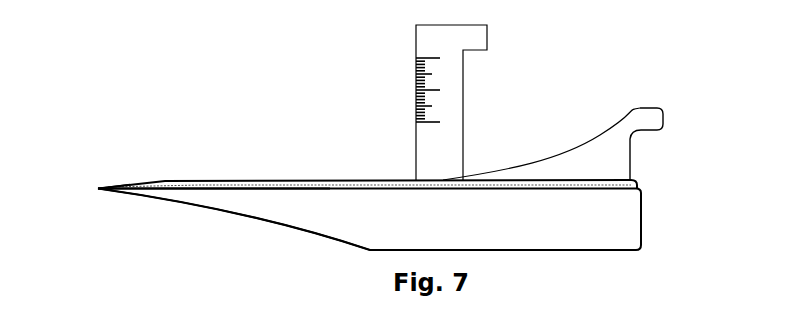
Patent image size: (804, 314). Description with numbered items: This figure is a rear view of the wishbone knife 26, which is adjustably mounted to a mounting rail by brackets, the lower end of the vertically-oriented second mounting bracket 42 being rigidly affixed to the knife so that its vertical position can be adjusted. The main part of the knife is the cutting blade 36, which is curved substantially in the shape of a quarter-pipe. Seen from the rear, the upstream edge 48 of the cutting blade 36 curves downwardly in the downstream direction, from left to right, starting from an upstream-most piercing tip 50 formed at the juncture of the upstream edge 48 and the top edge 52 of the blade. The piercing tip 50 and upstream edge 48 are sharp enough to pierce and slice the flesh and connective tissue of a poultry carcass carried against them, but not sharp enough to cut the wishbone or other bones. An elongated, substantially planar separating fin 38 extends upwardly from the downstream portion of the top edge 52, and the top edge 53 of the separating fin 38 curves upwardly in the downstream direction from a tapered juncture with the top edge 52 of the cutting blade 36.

The wishbone knife 26 is at (638, 220).
The cutting blade 36 is at (235, 198).
The separating fin 38 is at (610, 142).
The second mounting bracket 42 is at (423, 147).
The upstream edge 48 is at (197, 205).
The piercing tip 50 is at (98, 188).
The top edge 52 is at (303, 185).
The top edge of separating fin 53 is at (542, 162).